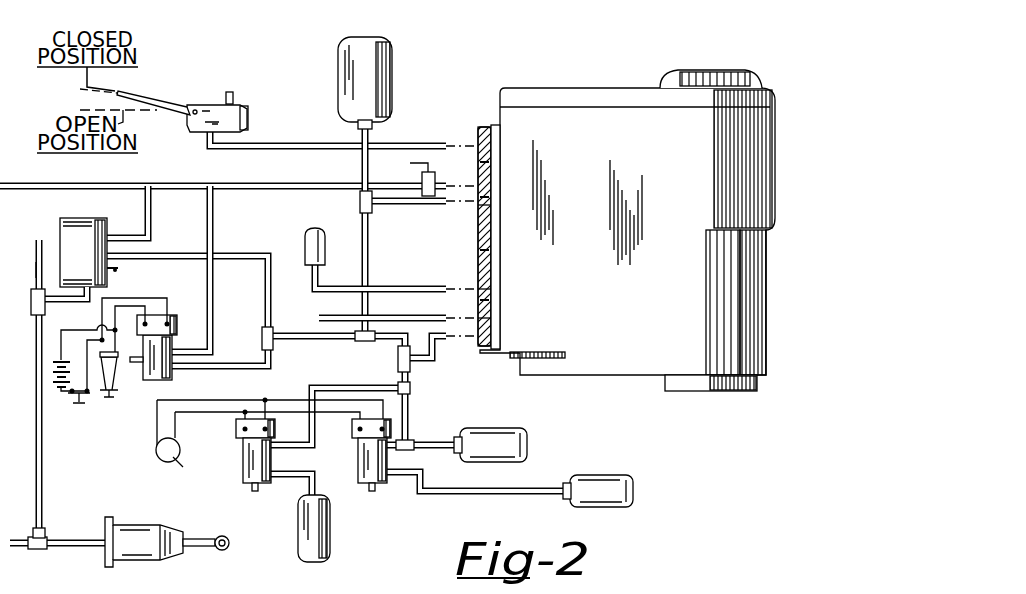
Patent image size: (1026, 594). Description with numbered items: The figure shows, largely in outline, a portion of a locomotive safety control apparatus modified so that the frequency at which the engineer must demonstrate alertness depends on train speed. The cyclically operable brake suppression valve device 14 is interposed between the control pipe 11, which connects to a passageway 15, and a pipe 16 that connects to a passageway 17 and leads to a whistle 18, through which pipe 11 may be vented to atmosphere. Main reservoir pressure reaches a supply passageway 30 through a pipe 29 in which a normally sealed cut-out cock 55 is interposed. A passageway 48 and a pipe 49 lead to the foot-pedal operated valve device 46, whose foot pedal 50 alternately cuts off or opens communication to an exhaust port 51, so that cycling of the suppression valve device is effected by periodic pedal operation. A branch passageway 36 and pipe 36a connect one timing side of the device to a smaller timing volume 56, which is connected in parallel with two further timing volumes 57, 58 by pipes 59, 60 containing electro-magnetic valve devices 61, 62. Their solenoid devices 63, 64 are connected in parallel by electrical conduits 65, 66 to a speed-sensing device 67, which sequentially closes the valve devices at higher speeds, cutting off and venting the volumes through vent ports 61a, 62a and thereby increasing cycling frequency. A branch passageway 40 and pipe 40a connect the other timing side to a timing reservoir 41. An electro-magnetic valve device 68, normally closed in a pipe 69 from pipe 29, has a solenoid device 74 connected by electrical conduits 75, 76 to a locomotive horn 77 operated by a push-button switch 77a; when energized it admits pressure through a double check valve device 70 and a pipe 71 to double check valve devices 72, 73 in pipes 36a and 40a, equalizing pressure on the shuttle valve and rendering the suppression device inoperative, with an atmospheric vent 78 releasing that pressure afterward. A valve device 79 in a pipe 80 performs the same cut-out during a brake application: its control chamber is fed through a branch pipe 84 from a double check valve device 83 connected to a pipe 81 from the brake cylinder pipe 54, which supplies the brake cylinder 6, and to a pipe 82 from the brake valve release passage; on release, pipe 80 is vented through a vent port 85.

The brake cylinder 6 is at (135, 525).
The control pipe 11 is at (320, 318).
The brake suppression valve device 14 is at (499, 83).
The passageway 15 is at (474, 316).
The pipe 16 is at (421, 286).
The passageway 17 is at (474, 287).
The whistle 18 is at (306, 240).
The pipe 29 is at (310, 186).
The supply passageway 30 is at (479, 196).
The branch passageway 36 is at (480, 340).
The pipe 36a is at (412, 403).
The branch passageway 40 is at (479, 212).
The pipe 40a is at (370, 178).
The timing volume or reservoir 41 is at (390, 78).
The foot-pedal operated valve device 46 is at (211, 94).
The passageway 48 is at (473, 139).
The pipe 49 is at (309, 147).
The foot pedal 50 is at (170, 88).
The exhaust port 51 is at (237, 88).
The brake cylinder pipe 54 is at (67, 546).
The cut-out cock 55 is at (437, 175).
The timing volume or reservoir 56 is at (490, 433).
The timing volume or reservoir 57 is at (596, 478).
The timing volume or reservoir 58 is at (330, 524).
The pipe 59 is at (416, 470).
The pipe 60 is at (288, 445).
The electro-magnetic valve device 61 is at (354, 469).
The vent port 61a is at (376, 492).
The electro-magnetic valve device 62 is at (239, 485).
The vent port 62a is at (257, 492).
The solenoid device 63 is at (356, 437).
The solenoid device 64 is at (236, 430).
The electrical conduit 65 is at (298, 400).
The electrical conduit 66 is at (331, 412).
The speed-sensing device 67 is at (179, 460).
The electro-magnetic valve device 68 is at (172, 369).
The pipe 69 is at (210, 367).
The double check valve device 70 is at (262, 341).
The pipe 71 is at (365, 273).
The double check valve device 72 is at (398, 359).
The double check valve device 73 is at (360, 203).
The solenoid device 74 is at (172, 320).
The electrical conduit 75 is at (125, 306).
The electrical conduit 76 is at (170, 298).
The locomotive horn 77 is at (116, 388).
The push-button switch 77a is at (77, 406).
The atmospheric vent 78 is at (138, 380).
The valve device 79 is at (104, 221).
The pipe 80 is at (156, 256).
The pipe 81 is at (42, 460).
The pipe 82 is at (38, 270).
The double check valve device 83 is at (36, 312).
The branch pipe 84 is at (82, 304).
The vent port 85 is at (120, 272).